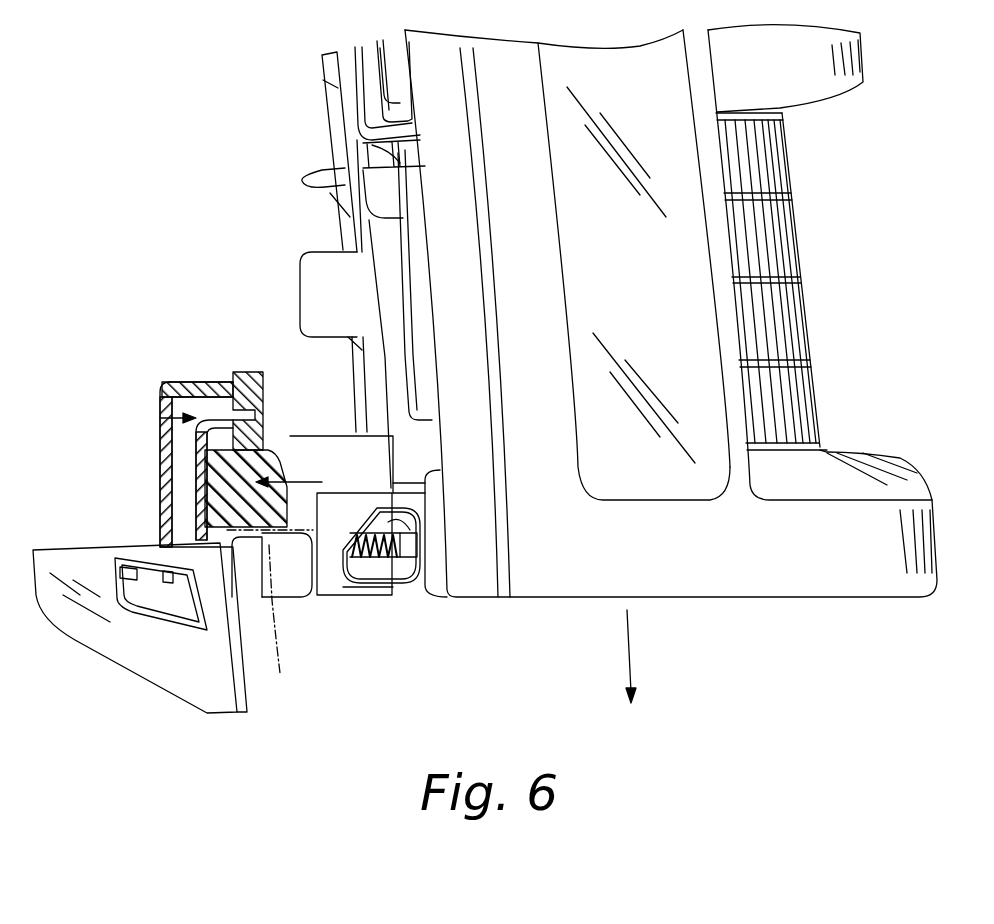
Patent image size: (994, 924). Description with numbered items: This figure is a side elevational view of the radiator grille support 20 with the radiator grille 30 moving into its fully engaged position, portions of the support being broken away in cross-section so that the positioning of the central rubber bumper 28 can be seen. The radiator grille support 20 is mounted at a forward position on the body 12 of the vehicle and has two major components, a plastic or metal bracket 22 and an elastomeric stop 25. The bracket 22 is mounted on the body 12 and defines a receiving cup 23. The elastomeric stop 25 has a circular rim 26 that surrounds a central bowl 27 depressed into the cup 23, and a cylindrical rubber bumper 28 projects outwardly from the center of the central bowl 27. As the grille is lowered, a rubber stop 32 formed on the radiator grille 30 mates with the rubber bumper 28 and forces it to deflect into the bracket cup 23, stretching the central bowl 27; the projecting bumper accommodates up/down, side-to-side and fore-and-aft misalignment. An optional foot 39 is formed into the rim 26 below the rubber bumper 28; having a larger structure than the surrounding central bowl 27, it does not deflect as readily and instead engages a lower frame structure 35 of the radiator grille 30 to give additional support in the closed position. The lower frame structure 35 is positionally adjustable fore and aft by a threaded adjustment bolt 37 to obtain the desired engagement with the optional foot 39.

The body 12 is at (145, 662).
The radiator grille support 20 is at (176, 345).
The bracket 22 is at (158, 490).
The receiving cup 23 is at (160, 418).
The elastomeric stop 25 is at (230, 393).
The circular rim 26 is at (237, 374).
The central bowl 27 is at (253, 437).
The cylindrical rubber bumper 28 is at (282, 520).
The radiator grille 30 is at (817, 583).
The rubber stop 32 is at (345, 455).
The lower frame structure 35 is at (335, 587).
The threaded adjustment bolt 37 is at (405, 512).
The optional foot 39 is at (270, 618).